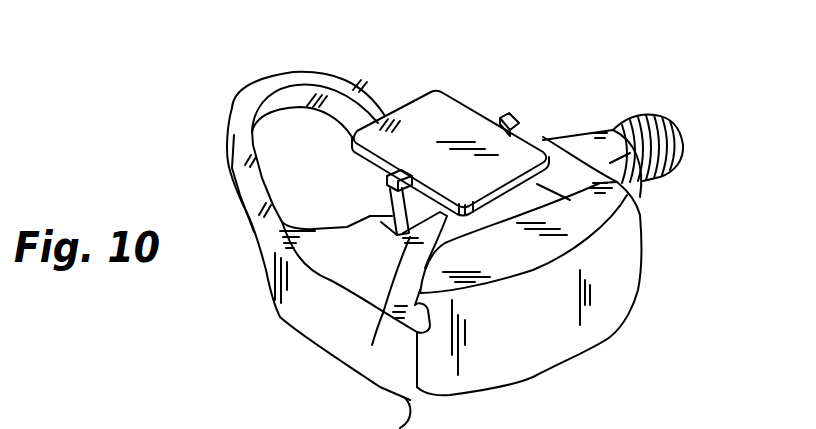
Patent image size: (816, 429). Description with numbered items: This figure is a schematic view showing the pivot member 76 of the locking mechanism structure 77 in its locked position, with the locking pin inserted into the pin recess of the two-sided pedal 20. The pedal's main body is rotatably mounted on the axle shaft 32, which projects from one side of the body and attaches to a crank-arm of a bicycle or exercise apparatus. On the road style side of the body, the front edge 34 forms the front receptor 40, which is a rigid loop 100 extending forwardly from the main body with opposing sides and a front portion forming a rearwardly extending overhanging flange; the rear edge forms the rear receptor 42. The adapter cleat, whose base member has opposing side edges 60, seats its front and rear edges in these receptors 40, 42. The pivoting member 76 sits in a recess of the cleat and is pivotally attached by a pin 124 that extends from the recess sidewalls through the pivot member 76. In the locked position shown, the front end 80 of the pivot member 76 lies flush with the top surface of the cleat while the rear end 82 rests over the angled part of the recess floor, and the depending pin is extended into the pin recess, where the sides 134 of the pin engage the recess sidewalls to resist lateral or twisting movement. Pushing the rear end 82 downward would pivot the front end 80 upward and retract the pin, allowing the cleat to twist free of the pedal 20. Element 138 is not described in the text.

The two-sided pedal 20 is at (267, 318).
The axle shaft 32 is at (613, 130).
The front edge 34 is at (242, 107).
The front receptor 40 is at (313, 103).
The rear receptor 42 is at (430, 327).
The side edges 60 is at (297, 270).
The pivoting member 76 is at (453, 113).
The locking mechanism structure 77 is at (381, 413).
The front end of pivot mechanism 80 is at (425, 110).
The rear end of pivot mechanism 82 is at (535, 152).
The rigid loop 100 is at (293, 72).
The pin 124 is at (520, 117).
The sides of the pin 134 is at (414, 235).
The strut 138 is at (390, 220).